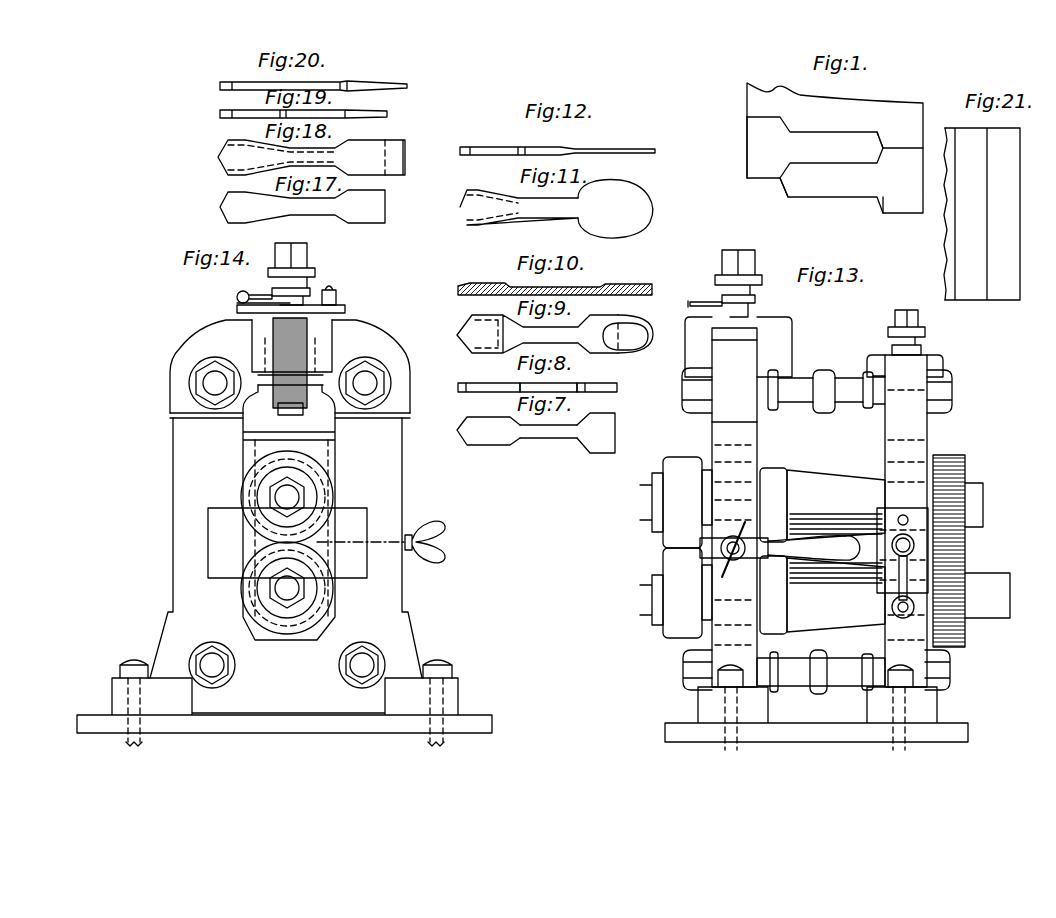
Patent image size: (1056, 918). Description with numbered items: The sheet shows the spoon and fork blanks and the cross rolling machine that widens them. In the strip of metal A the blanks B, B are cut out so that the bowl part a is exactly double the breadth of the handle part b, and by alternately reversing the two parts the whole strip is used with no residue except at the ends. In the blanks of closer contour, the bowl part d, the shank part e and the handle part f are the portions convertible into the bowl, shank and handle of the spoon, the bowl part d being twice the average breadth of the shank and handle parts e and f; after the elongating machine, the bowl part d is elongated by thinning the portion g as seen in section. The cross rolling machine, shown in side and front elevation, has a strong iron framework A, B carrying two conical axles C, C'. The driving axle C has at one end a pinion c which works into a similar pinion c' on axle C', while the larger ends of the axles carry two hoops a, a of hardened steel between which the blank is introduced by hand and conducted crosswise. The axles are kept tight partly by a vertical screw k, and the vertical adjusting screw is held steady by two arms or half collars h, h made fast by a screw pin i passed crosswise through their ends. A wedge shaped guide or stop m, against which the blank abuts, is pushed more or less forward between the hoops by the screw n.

In FIG. 1, the strip of metal A is at (835, 148).
In FIG. 14, the strip of metal A is at (284, 533).
In FIG. 1, the bowl part of blank a is at (815, 165).
In FIG. 13, the bowl part of blank a is at (676, 547).
In FIG. 1, the blank B is at (835, 151).
In FIG. 1, the handle part of blank b is at (831, 164).
In FIG. 13, the driving axle C is at (822, 595).
In FIG. 13, the conical axle C' is at (822, 505).
In FIG. 13, the pinion c is at (987, 613).
In FIG. 13, the pinion c' is at (958, 546).
In FIG. 14, the bowl part of blank d is at (287, 476).
In FIG. 9, the bowl part of blank d is at (537, 334).
In FIG. 8, the bowl part of blank d is at (597, 380).
In FIG. 7, the bowl part of blank d is at (596, 433).
In FIG. 13, the bowl part of blank d is at (814, 563).
In FIG. 8, the shank part of blank e is at (548, 380).
In FIG. 7, the shank part of blank e is at (548, 430).
In FIG. 8, the handle part of blank f is at (489, 380).
In FIG. 7, the handle part of blank f is at (488, 431).
In FIG. 10, the thinned portion of bowl part g is at (555, 284).
In FIG. 9, the thinned portion of bowl part g is at (628, 334).
In FIG. 14, the arms or half collars h is at (291, 302).
In FIG. 14, the screw pin i is at (263, 291).
In FIG. 13, the screw pin i is at (705, 295).
In FIG. 14, the set screw i' is at (339, 290).
In FIG. 14, the vertical screw k is at (291, 274).
In FIG. 13, the vertical screw k is at (822, 302).
In FIG. 14, the wedge shaped guide or stop m is at (361, 543).
In FIG. 14, the screw n is at (425, 541).
In FIG. 13, the screw n is at (733, 552).